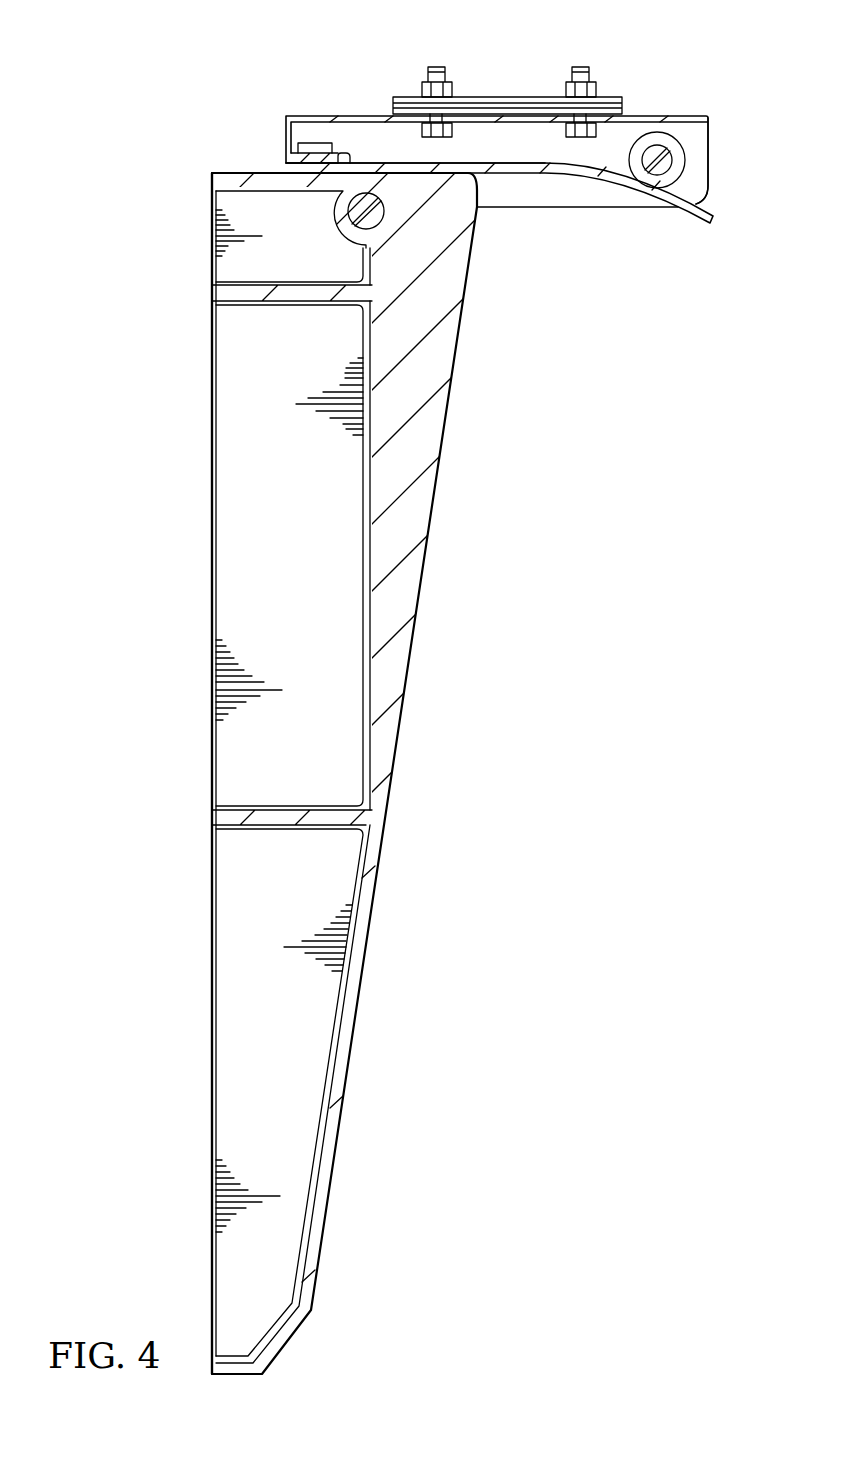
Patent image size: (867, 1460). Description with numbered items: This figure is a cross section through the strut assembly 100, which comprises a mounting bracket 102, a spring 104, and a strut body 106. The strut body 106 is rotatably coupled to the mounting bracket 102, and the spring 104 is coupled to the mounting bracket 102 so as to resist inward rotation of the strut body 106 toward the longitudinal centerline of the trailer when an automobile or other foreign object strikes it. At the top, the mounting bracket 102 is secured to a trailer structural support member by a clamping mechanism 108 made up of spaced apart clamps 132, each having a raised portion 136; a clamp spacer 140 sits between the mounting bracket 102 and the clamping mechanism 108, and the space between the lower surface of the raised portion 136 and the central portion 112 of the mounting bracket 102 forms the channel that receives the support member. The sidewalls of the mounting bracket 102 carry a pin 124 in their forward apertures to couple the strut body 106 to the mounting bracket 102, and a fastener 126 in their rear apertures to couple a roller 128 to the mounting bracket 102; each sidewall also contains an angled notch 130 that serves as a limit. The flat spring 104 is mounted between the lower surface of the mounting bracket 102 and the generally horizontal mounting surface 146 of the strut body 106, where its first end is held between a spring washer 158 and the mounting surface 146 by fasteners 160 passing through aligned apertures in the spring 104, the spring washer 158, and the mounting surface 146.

The strut assembly 100 is at (183, 90).
The mounting bracket 102 is at (297, 110).
The spring 104 is at (696, 213).
The strut body 106 is at (433, 743).
The clamping mechanism 108 is at (508, 71).
The central portion 112 is at (703, 124).
The pin 124 is at (352, 207).
The fastener 126 is at (672, 152).
The roller 128 is at (692, 152).
The angled notch 130 is at (345, 160).
The clamps 132 is at (494, 97).
The raised portion 136 is at (410, 95).
The clamp spacer 140 is at (607, 110).
The mounting surface 146 is at (213, 173).
The spring washer 158 is at (290, 158).
The fasteners 160 is at (322, 143).